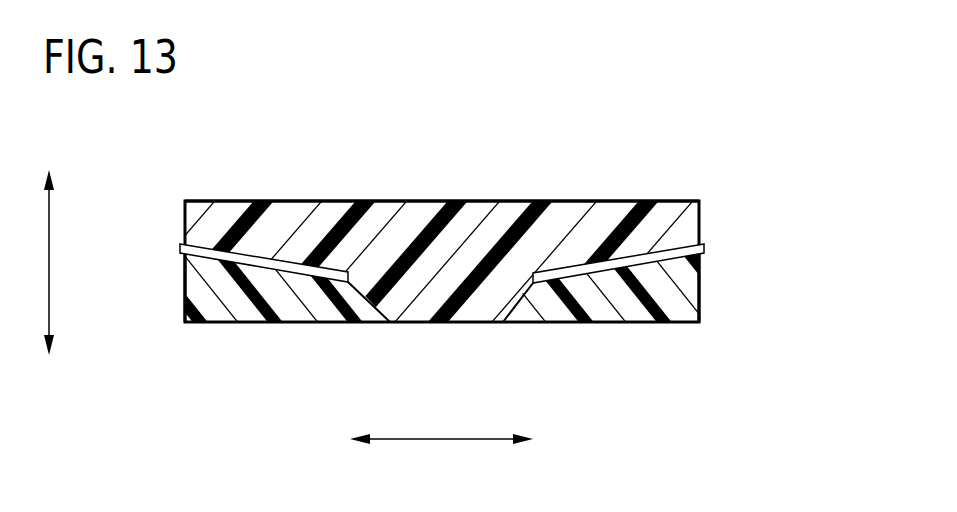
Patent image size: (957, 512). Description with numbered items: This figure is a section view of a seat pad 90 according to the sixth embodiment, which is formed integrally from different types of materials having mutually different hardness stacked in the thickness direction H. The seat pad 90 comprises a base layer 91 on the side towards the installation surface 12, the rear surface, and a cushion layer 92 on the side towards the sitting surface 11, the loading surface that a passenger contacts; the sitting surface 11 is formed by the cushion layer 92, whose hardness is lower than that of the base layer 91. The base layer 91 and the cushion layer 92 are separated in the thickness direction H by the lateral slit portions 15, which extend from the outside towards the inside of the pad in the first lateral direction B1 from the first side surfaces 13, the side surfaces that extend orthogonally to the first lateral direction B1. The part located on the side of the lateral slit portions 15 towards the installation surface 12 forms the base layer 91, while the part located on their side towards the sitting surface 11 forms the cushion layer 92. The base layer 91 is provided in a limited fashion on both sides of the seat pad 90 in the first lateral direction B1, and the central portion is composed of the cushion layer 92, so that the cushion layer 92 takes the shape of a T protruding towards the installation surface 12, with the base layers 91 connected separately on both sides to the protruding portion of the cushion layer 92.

The seat pad 90 is at (696, 150).
The cushion layer 92 is at (243, 207).
The base layer 91 is at (253, 320).
The sitting surface 11 is at (449, 206).
The installation surface 12 is at (440, 320).
The first side surfaces 13 is at (185, 289).
The lateral slit portion 15 is at (172, 244).
The thickness direction H is at (40, 262).
The first lateral direction B1 is at (441, 456).